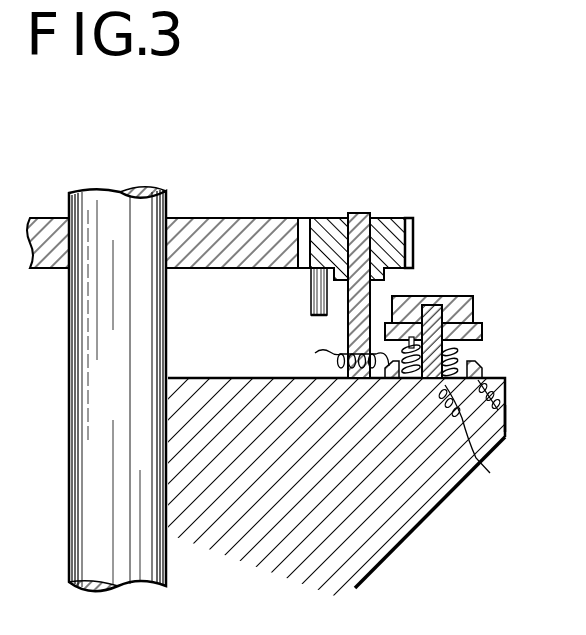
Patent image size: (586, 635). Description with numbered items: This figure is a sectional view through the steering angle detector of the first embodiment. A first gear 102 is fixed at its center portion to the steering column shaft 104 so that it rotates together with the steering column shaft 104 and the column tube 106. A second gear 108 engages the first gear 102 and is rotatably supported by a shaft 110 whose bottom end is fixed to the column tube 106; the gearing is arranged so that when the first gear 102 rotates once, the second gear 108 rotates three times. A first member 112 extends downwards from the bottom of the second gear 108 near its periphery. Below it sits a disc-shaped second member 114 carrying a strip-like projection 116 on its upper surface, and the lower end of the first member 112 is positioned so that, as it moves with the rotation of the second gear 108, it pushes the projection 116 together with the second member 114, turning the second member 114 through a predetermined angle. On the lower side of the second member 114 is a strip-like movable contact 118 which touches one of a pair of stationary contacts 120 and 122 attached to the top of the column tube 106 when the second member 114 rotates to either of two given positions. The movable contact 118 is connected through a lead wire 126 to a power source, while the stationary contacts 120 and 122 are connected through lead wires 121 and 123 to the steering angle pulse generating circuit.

The first gear 102 is at (240, 233).
The steering column shaft 104 is at (103, 208).
The column tube 106 is at (373, 540).
The second gear 108 is at (329, 233).
The shaft 110 is at (361, 224).
The first member 112 is at (312, 292).
The second member 114 is at (482, 328).
The projection 116 is at (463, 297).
The movable contact 118 is at (441, 348).
The stationary contact 120 is at (388, 378).
The lead wire 121 is at (315, 353).
The stationary contact 122 is at (478, 363).
The lead wire 123 is at (506, 418).
The lead wire 126 is at (484, 434).